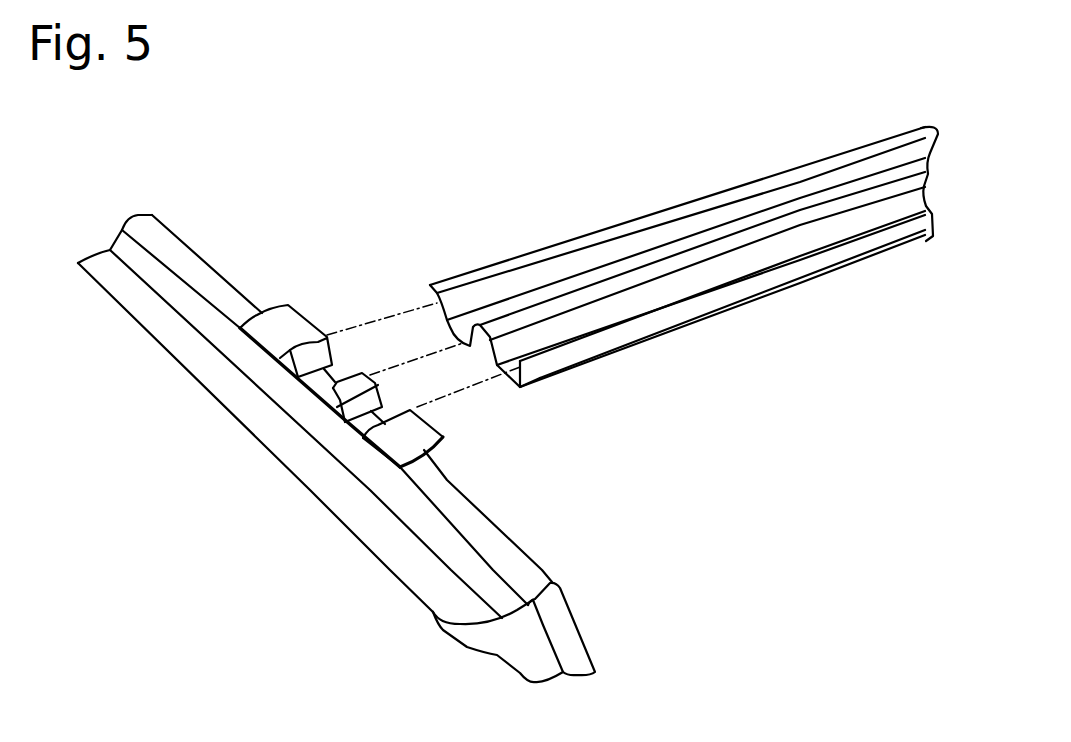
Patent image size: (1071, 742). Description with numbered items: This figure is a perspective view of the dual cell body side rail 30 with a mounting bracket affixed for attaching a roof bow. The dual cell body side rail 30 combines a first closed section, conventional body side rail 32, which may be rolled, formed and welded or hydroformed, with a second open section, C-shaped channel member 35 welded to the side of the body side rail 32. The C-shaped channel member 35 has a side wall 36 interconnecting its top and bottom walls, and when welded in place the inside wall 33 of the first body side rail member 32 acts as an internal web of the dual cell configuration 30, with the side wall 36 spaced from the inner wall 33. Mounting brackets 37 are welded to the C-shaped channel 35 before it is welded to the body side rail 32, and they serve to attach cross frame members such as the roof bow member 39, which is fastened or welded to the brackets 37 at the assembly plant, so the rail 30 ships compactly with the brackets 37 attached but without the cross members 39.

The dual cell body side rail 30 is at (379, 158).
The first body side rail member 32 is at (358, 507).
The inside wall 33 is at (545, 640).
The C-shaped channel member 35 is at (555, 613).
The side wall 36 is at (502, 530).
The mounting bracket 37 is at (298, 328).
The roof bow member 39 is at (646, 212).